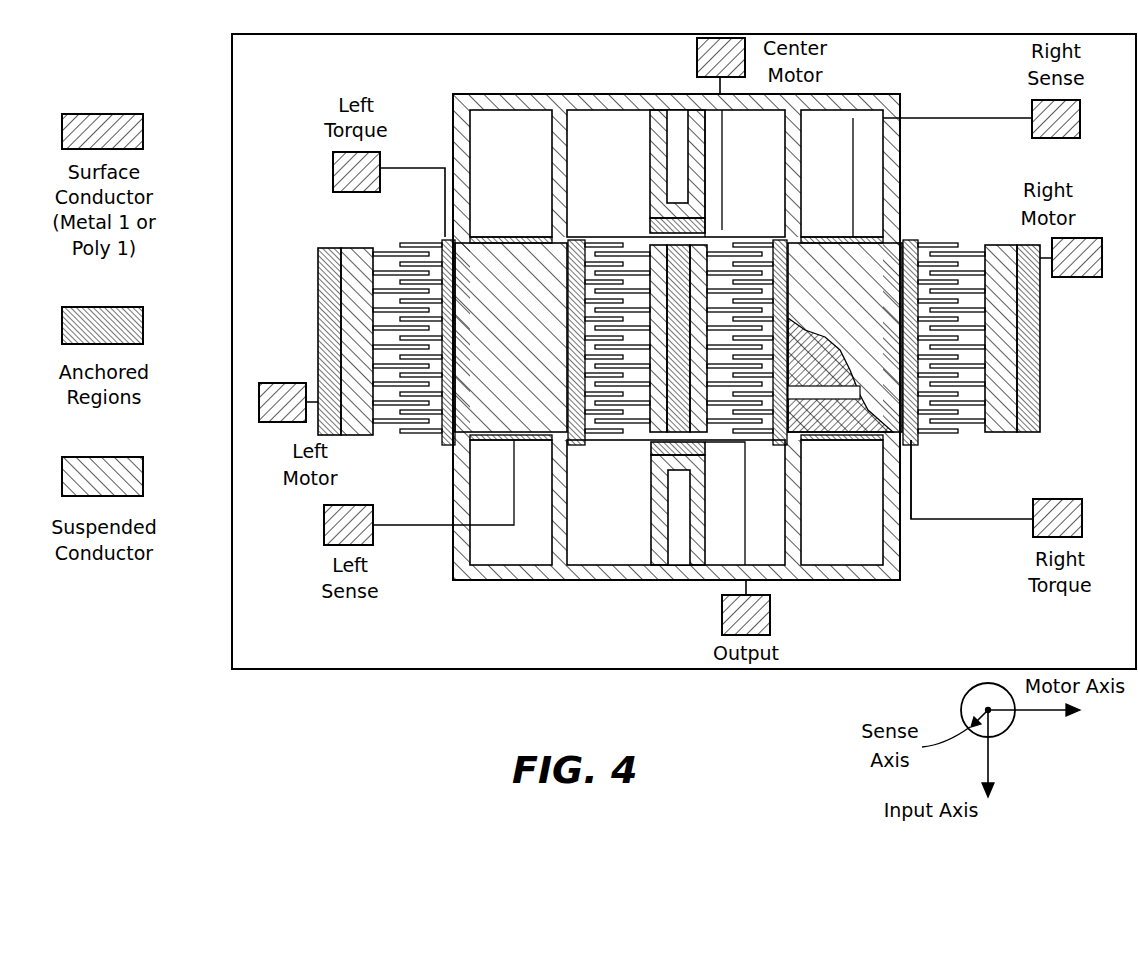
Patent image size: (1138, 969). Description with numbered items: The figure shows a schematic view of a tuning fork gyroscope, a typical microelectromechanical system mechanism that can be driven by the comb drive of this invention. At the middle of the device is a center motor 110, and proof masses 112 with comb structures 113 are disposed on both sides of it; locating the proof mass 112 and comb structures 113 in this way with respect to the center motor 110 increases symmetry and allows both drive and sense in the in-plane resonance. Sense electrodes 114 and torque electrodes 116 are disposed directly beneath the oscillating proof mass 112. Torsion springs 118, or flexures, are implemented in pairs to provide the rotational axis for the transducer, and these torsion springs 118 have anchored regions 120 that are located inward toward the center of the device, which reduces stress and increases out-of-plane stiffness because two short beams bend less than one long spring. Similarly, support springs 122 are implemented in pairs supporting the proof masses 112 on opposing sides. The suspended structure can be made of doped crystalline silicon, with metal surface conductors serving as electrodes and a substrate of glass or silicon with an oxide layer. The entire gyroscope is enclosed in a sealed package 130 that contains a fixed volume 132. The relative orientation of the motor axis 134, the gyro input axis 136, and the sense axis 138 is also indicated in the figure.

The center motor 110 is at (648, 242).
The proof mass 112 is at (525, 240).
The comb structures 113 is at (405, 438).
The sense electrodes 114 is at (777, 237).
The torque electrodes 116 is at (490, 237).
The torsion springs 118 is at (658, 139).
The anchored regions 120 is at (717, 231).
The support springs 122 is at (562, 540).
The sealed package 130 is at (648, 32).
The fixed volume 132 is at (880, 47).
The motor axis 134 is at (1051, 713).
The gyro input axis 136 is at (992, 757).
The sense axis 138 is at (968, 692).